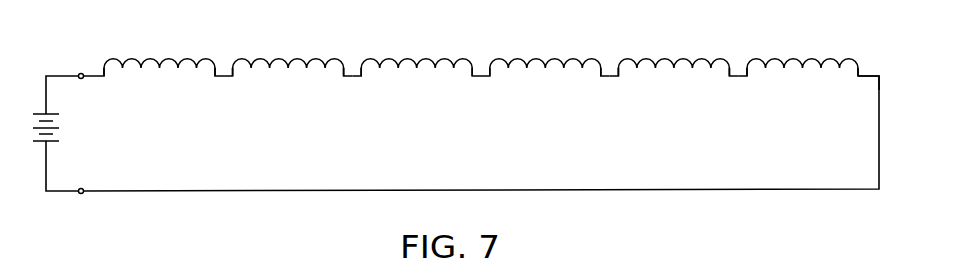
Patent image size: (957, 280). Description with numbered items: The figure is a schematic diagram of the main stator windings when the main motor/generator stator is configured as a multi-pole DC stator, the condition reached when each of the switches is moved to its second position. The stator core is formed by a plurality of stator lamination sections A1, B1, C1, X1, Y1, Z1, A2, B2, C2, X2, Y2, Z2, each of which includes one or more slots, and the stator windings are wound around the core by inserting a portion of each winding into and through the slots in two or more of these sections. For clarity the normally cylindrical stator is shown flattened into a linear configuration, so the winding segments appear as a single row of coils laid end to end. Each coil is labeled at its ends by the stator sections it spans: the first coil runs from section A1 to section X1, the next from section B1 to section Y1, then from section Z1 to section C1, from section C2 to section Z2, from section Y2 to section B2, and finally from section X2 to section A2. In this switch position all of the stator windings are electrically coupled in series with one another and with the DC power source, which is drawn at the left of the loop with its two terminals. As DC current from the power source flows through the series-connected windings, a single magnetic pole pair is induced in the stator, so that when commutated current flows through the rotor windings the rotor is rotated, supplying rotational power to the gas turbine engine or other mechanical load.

The stator lamination section A1 is at (94, 56).
The stator lamination section X1 is at (223, 56).
The stator lamination section B1 is at (233, 87).
The stator lamination section Y1 is at (346, 87).
The stator lamination section Z1 is at (352, 56).
The stator lamination section C1 is at (480, 56).
The stator lamination section C2 is at (488, 87).
The stator lamination section Z2 is at (603, 87).
The stator lamination section Y2 is at (608, 56).
The stator lamination section B2 is at (739, 56).
The stator lamination section X2 is at (749, 87).
The stator lamination section A2 is at (868, 63).